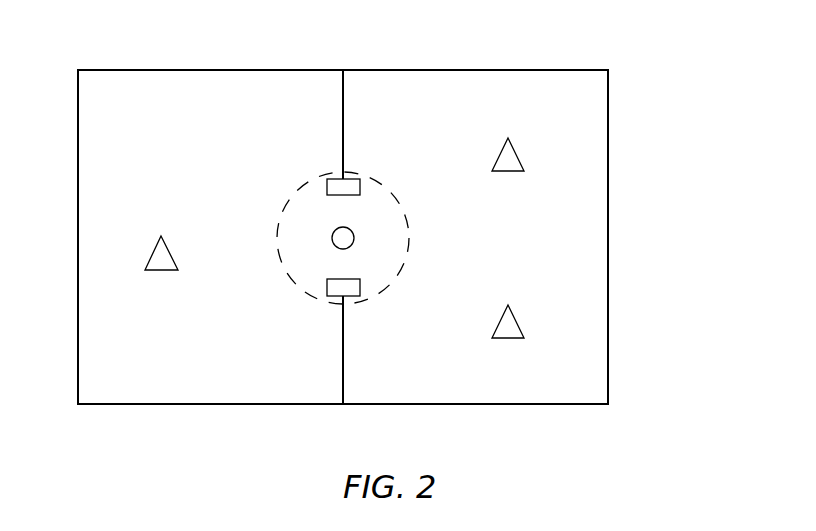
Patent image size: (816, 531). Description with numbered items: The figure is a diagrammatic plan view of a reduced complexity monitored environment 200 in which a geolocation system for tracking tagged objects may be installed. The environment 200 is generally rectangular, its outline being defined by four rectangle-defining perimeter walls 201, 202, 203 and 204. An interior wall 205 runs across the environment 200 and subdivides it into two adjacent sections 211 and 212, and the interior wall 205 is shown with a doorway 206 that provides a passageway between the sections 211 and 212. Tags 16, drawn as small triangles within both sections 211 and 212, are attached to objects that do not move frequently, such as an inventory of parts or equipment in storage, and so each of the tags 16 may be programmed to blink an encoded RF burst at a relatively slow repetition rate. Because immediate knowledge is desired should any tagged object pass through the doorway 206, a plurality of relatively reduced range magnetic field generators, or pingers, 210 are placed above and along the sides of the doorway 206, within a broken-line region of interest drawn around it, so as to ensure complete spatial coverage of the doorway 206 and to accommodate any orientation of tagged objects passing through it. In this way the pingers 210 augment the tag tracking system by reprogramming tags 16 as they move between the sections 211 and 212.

The monitored environment 200 is at (525, 62).
The perimeter wall 201 is at (406, 70).
The perimeter wall 202 is at (78, 258).
The perimeter wall 203 is at (270, 404).
The perimeter wall 204 is at (608, 325).
The interior wall 205 is at (343, 122).
The doorway 206 is at (352, 267).
The magnetic field generators 210 is at (327, 188).
The section 211 is at (151, 95).
The section 212 is at (570, 125).
The tags 16 is at (172, 260).